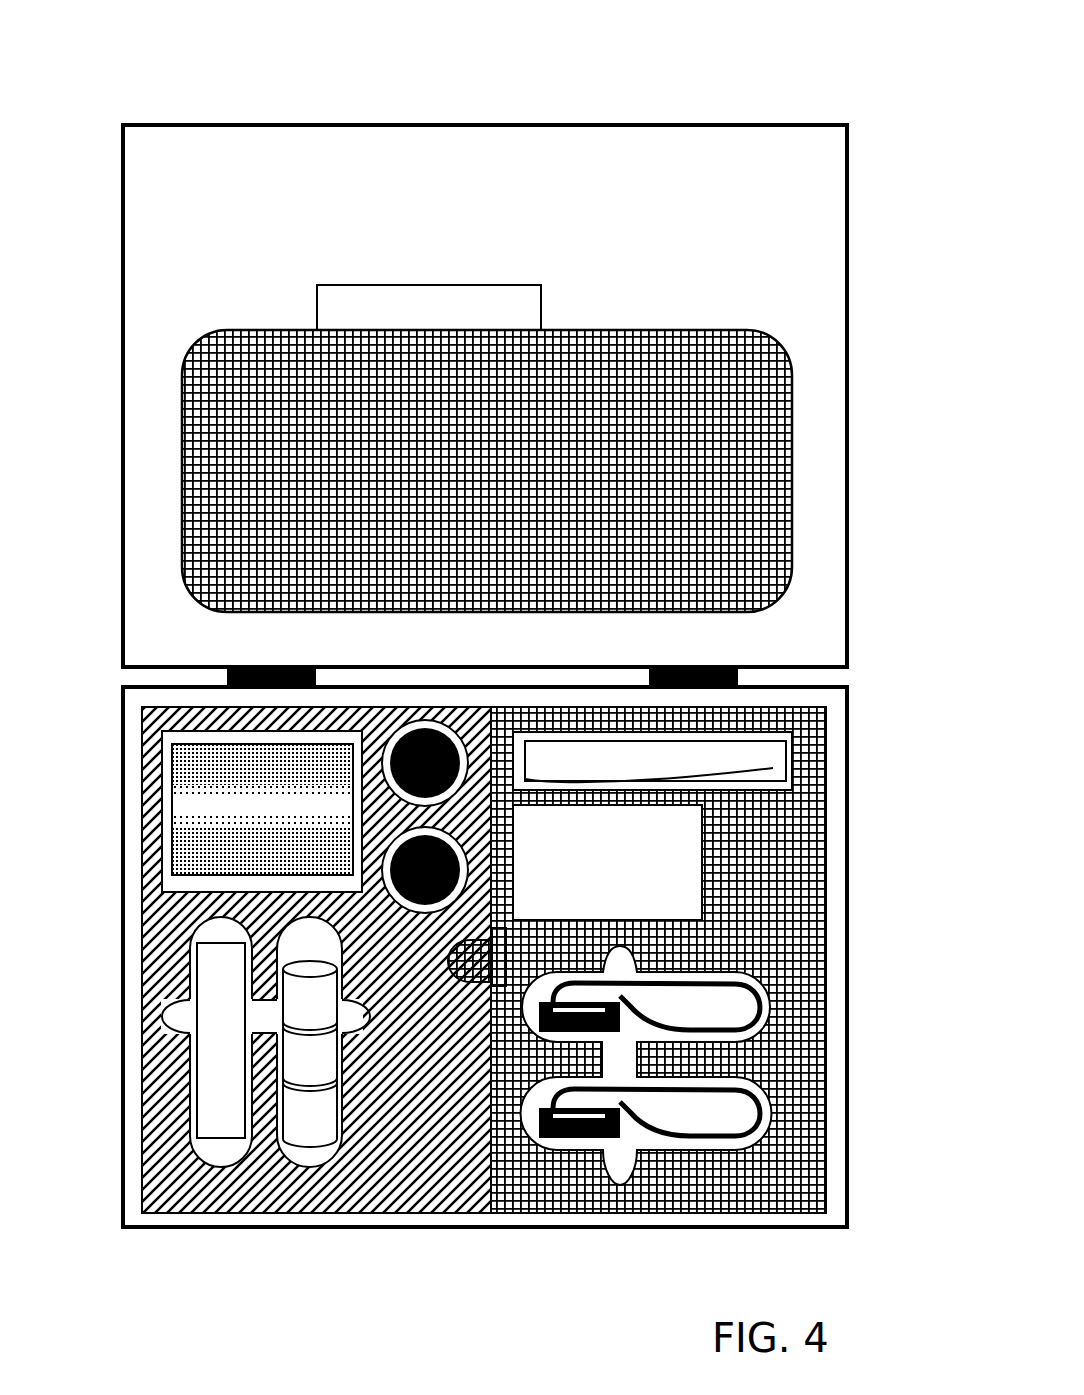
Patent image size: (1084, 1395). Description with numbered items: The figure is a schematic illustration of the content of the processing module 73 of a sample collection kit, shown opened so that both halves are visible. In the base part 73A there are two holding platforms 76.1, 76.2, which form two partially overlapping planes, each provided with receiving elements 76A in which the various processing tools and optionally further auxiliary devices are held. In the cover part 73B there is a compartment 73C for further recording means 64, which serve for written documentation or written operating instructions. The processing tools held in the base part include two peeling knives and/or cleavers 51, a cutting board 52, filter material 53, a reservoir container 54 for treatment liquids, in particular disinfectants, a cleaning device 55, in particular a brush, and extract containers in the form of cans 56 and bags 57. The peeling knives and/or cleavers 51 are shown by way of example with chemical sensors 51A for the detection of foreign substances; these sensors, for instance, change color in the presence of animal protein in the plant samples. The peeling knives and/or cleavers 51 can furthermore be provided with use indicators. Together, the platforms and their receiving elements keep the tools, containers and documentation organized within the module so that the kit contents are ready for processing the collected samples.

The processing module 73 is at (750, 97).
The base part 73A is at (186, 1230).
The cover part 73B is at (236, 124).
The compartment 73C is at (316, 350).
The recording means 64 is at (401, 285).
The reservoir container 54 is at (412, 737).
The filter material 53 is at (206, 805).
The cleaning device 55 is at (213, 1127).
The cans 56 is at (302, 1023).
The bags 57 is at (773, 767).
The cutting board 52 is at (690, 828).
The peeling knives and/or cleavers 51 is at (760, 1003).
The chemical sensors 51A is at (578, 1003).
The holding platform 76.1 is at (320, 1197).
The holding platform 76.2 is at (704, 1190).
The receiving elements 76A is at (348, 1128).